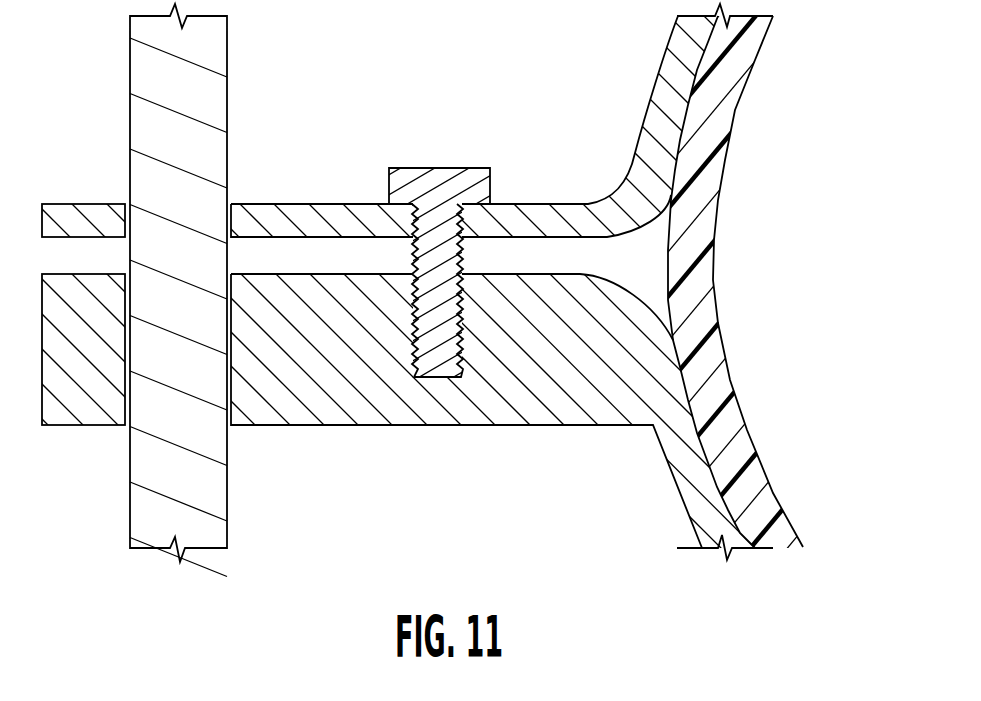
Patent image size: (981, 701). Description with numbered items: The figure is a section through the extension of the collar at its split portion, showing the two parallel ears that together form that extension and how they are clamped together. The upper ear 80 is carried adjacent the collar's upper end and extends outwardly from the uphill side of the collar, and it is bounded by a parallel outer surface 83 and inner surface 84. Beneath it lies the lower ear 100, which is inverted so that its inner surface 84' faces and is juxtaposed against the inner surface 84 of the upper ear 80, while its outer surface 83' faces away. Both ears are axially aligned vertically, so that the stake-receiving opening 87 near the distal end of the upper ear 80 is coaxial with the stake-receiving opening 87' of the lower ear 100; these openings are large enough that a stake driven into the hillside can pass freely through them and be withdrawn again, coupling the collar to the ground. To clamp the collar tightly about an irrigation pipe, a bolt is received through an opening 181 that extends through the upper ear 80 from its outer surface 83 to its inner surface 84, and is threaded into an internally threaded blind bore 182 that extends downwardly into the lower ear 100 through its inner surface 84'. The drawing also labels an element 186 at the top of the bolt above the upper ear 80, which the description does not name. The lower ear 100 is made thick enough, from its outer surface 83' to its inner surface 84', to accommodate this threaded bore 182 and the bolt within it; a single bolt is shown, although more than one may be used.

The ear 80 is at (490, 350).
The outer surface 83 is at (490, 350).
The outer surface 83' is at (490, 350).
The inner surface 84 is at (419, 256).
The inner surface 84' is at (405, 194).
The stake-receiving opening 87 is at (181, 290).
The stake-receiving opening 87' is at (157, 290).
The ear 100 is at (490, 350).
The opening 181 is at (463, 281).
The internally threaded blind bore 182 is at (435, 330).
The fastener head 186 is at (490, 168).